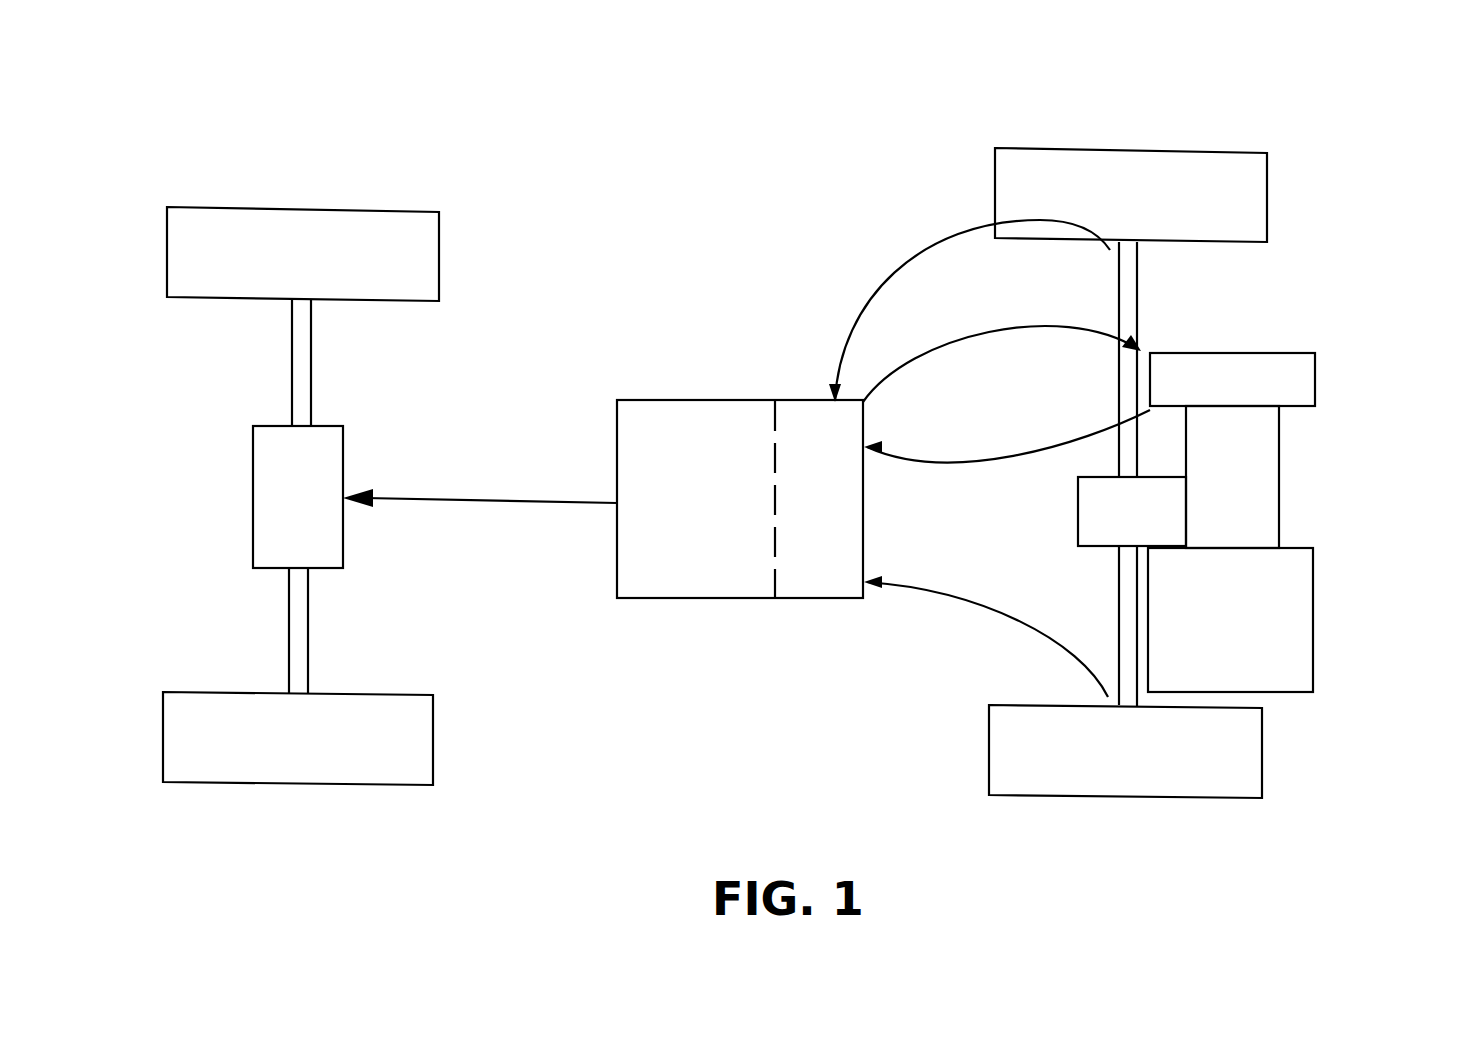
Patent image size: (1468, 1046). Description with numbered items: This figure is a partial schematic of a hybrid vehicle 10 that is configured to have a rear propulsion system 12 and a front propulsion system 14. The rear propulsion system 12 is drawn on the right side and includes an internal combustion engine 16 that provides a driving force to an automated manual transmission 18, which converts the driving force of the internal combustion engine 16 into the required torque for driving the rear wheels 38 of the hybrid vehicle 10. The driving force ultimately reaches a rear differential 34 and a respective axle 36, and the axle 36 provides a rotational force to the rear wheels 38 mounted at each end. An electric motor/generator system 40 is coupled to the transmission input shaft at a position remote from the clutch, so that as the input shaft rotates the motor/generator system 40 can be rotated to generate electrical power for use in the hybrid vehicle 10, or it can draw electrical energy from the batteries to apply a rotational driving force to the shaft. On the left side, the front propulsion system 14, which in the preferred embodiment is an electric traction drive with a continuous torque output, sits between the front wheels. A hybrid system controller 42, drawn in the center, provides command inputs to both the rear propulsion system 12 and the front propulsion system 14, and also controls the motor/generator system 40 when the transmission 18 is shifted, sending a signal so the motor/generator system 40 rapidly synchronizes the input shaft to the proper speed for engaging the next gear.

The hybrid vehicle 10 is at (804, 200).
The rear propulsion system 12 is at (1315, 555).
The front propulsion system 14 is at (328, 452).
The internal combustion engine 16 is at (1270, 653).
The automated manual transmission 18 is at (1262, 483).
The rear differential 34 is at (1088, 518).
The axle 36 is at (1130, 297).
The rear wheels 38 is at (318, 228).
The electric motor/generator system 40 is at (1297, 383).
The hybrid system controller 42 is at (712, 600).